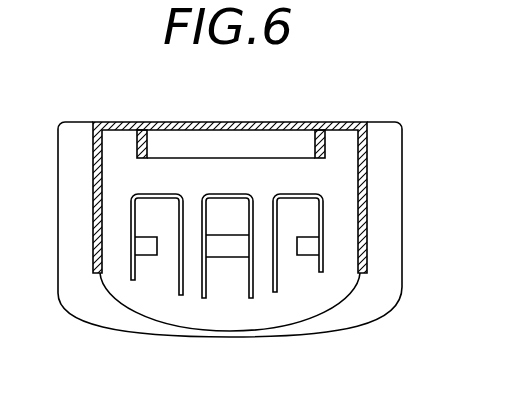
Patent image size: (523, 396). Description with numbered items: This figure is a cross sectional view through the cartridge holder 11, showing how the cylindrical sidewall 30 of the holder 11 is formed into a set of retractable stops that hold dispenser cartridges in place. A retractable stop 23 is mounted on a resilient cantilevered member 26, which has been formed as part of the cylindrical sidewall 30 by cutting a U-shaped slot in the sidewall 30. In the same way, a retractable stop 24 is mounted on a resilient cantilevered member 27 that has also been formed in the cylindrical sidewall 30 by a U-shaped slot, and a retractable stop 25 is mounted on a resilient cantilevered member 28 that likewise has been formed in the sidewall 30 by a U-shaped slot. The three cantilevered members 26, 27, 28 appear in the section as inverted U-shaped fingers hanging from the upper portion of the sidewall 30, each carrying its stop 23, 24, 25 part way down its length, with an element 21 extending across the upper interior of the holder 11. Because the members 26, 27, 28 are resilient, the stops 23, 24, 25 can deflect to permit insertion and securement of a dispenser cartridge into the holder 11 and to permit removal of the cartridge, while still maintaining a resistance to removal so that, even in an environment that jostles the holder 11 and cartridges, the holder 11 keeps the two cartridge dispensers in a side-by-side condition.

The holder 11 is at (400, 168).
The spacer plate 21 is at (133, 143).
The retractable stop 23 is at (149, 247).
The retractable stop 24 is at (224, 247).
The retractable stop 25 is at (305, 247).
The resilient cantilevered member 26 is at (150, 212).
The resilient cantilevered member 27 is at (222, 213).
The resilient cantilevered member 28 is at (298, 218).
The cylindrical sidewall 30 is at (345, 148).